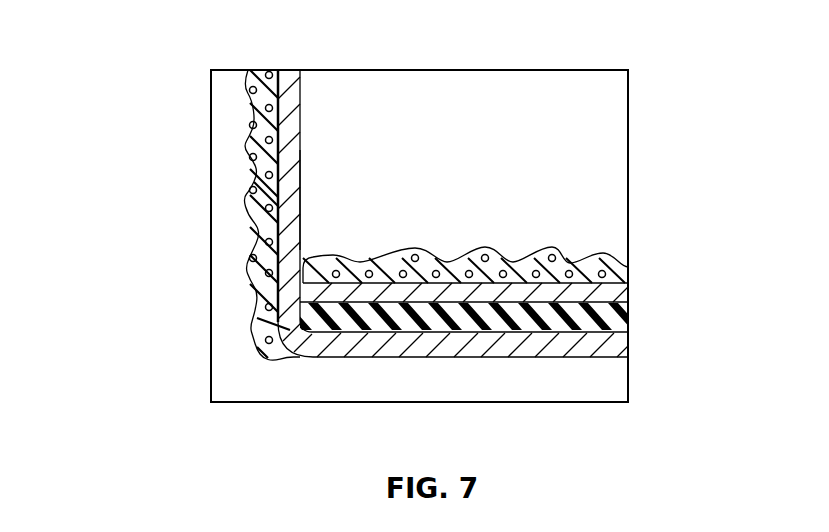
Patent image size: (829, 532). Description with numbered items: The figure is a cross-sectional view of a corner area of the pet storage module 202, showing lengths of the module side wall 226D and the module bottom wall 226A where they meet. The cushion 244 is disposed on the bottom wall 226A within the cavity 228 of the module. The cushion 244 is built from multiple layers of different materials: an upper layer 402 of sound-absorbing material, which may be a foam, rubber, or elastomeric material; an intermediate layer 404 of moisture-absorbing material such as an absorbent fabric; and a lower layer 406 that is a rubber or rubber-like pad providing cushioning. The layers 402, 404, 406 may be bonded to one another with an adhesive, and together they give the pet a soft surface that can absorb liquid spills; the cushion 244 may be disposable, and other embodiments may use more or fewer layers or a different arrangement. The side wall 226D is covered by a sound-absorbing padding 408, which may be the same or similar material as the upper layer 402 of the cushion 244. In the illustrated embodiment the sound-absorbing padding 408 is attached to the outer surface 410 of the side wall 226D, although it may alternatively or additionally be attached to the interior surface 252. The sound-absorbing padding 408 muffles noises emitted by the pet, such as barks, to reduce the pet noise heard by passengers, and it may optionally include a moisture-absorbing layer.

The pet storage module 202 is at (188, 36).
The cavity 228 is at (414, 145).
The sound-absorbing padding 408 is at (246, 95).
The outer surface 410 is at (283, 200).
The side wall 226D is at (297, 106).
The interior surface 252 is at (305, 230).
The bottom wall 226A is at (385, 347).
The cushion 244 is at (494, 278).
The upper layer 402 is at (550, 248).
The intermediate layer 404 is at (557, 297).
The lower layer 406 is at (568, 325).